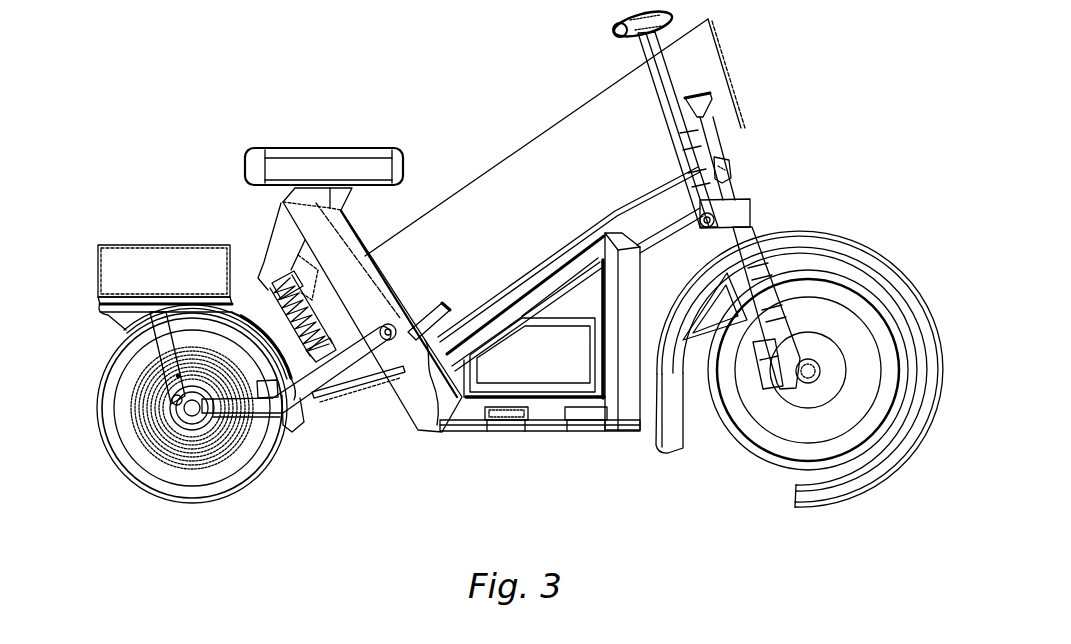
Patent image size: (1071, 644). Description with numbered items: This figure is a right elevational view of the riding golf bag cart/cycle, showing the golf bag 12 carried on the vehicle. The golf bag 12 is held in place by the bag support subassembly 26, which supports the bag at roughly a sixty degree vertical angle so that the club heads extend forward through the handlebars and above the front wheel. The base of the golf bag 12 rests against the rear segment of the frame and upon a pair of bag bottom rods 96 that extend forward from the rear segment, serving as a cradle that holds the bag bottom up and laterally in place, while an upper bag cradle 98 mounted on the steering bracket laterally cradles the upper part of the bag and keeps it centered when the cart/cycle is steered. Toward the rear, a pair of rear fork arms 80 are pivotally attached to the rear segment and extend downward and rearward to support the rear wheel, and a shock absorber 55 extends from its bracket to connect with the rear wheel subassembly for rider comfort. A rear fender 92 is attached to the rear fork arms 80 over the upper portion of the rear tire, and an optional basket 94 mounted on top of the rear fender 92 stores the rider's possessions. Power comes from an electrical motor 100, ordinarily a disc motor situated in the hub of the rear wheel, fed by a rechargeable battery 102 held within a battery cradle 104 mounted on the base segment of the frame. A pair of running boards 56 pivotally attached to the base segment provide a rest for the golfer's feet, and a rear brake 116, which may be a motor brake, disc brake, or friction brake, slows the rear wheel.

The golf bag 12 is at (555, 217).
The bag support subassembly 26 is at (700, 134).
The shock absorber 55 is at (350, 392).
The running boards 56 is at (557, 426).
The rear fork arms 80 is at (387, 398).
The rear fender 92 is at (140, 322).
The basket 94 is at (178, 283).
The bag bottom rods 96 is at (430, 427).
The upper bag cradle 98 is at (712, 148).
The electrical motor 100 is at (190, 427).
The rechargeable battery 102 is at (555, 364).
The battery cradle 104 is at (486, 425).
The rear brake 116 is at (178, 443).